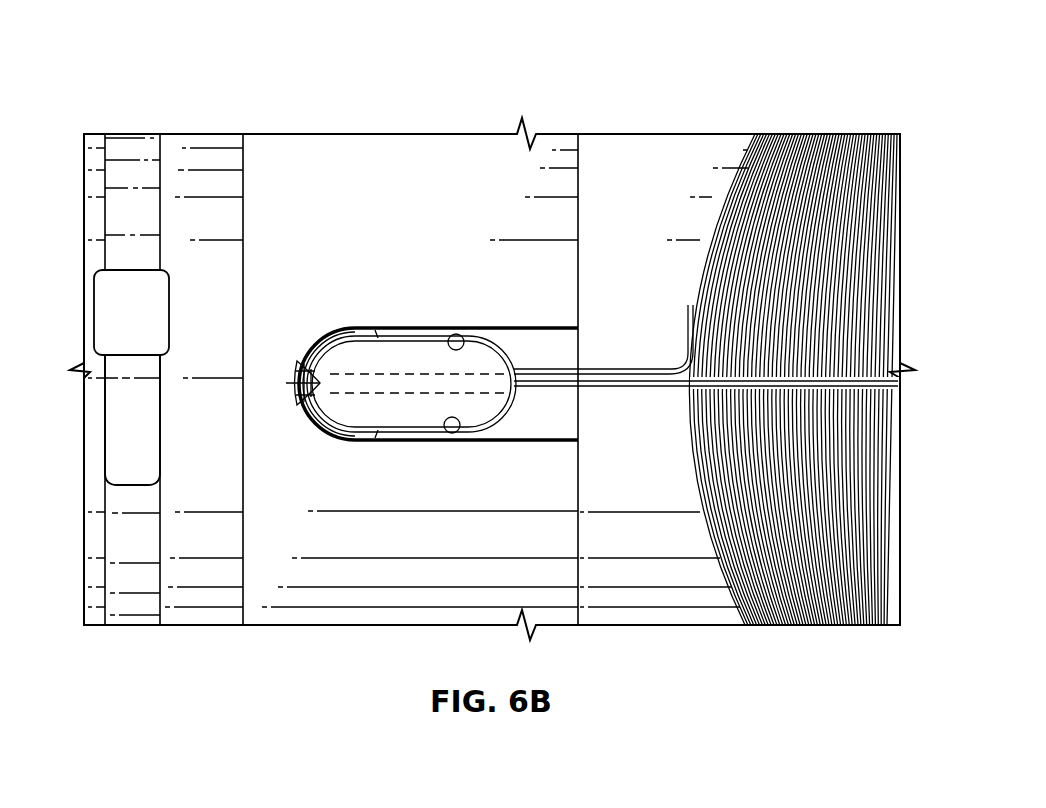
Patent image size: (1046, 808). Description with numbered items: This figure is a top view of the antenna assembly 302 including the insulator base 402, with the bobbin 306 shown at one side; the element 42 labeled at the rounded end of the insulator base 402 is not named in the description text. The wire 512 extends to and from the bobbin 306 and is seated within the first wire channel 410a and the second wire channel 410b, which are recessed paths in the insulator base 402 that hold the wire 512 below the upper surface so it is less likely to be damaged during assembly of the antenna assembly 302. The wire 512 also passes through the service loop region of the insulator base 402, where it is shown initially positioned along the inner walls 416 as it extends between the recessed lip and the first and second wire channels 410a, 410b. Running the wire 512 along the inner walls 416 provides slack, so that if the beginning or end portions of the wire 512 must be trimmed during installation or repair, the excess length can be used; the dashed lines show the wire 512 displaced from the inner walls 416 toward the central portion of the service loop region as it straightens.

The antenna assembly 302 is at (118, 52).
The bobbin 306 is at (670, 153).
The insulator base 402 is at (418, 326).
The lens 42 is at (322, 337).
The inner walls 416 is at (461, 334).
The first wire channel 410a is at (555, 370).
The second wire channel 410b is at (555, 398).
The wire 512 is at (605, 366).